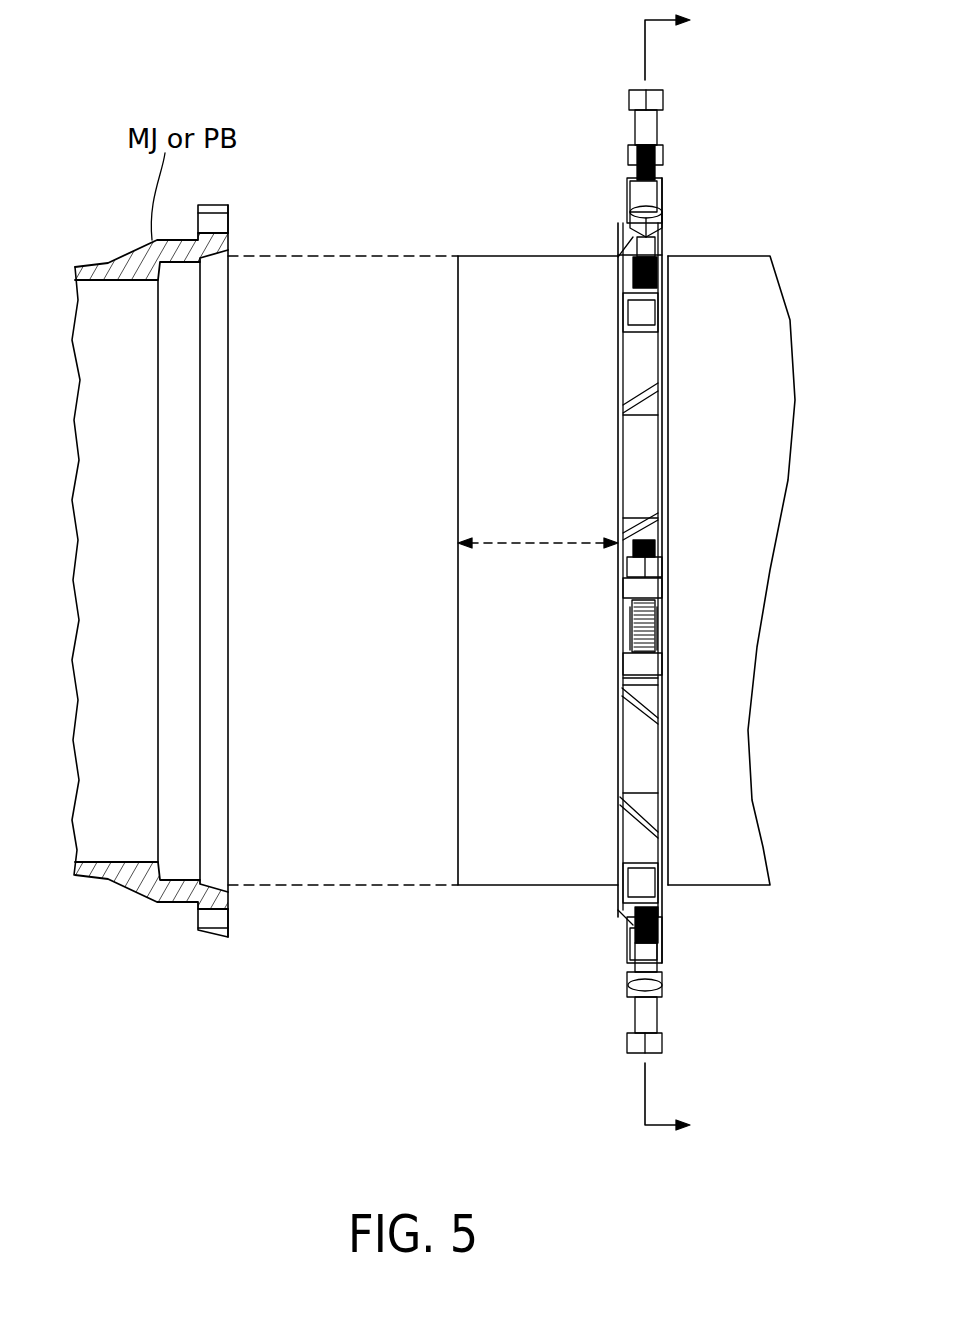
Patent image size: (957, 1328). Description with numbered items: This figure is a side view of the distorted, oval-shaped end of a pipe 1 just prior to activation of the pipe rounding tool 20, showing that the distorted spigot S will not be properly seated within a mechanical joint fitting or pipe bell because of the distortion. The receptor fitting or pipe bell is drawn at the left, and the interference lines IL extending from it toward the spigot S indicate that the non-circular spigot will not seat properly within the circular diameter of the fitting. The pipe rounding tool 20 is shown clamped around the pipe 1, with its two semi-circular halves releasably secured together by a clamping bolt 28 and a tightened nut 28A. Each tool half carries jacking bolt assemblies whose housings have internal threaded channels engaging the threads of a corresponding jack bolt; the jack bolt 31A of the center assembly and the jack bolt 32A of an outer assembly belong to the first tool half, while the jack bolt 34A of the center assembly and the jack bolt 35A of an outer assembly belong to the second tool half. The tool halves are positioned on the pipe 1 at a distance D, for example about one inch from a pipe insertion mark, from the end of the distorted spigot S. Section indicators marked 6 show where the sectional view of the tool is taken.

The pipe 1 is at (730, 325).
The pipe rounding tool 20 is at (682, 455).
The clamping bolt 28 is at (660, 632).
The nut 28A is at (660, 568).
The jack bolt 31A is at (647, 125).
The jack bolt 32A is at (650, 245).
The jack bolt 34A is at (650, 1018).
The jack bolt 35A is at (645, 958).
The section line for FIG. 6 is at (682, 573).
The distorted end S is at (458, 400).
The distance D is at (527, 545).
The interference lines IL is at (375, 255).